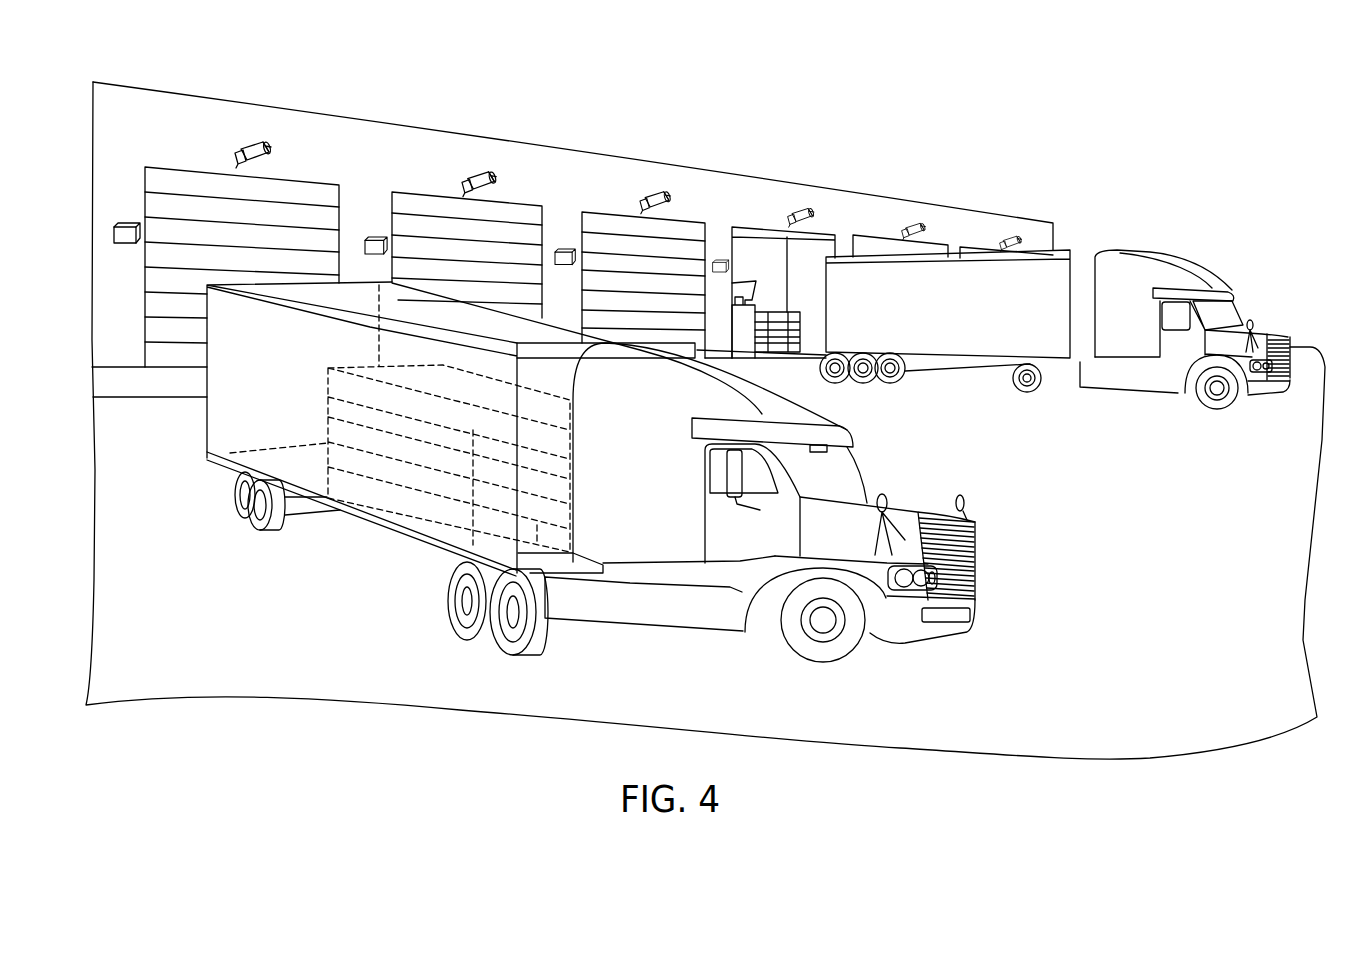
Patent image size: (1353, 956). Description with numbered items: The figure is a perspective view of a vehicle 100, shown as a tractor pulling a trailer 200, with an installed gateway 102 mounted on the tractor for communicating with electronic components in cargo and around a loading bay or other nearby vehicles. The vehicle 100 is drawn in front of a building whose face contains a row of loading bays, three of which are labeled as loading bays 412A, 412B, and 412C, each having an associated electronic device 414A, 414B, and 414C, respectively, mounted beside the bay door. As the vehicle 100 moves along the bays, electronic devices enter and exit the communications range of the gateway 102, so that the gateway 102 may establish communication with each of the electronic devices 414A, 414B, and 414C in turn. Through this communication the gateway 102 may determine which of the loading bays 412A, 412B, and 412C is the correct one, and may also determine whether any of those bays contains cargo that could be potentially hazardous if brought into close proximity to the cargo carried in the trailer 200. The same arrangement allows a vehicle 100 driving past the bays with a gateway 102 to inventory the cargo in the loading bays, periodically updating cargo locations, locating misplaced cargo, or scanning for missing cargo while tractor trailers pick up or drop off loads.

The vehicle 100 is at (683, 472).
The gateway 102 is at (827, 466).
The trailer 200 is at (212, 435).
The loading bay 412A is at (301, 192).
The loading bay 412B is at (511, 213).
The loading bay 412C is at (693, 228).
The electronic device 414A is at (127, 232).
The electronic device 414B is at (377, 232).
The electronic device 414C is at (567, 250).